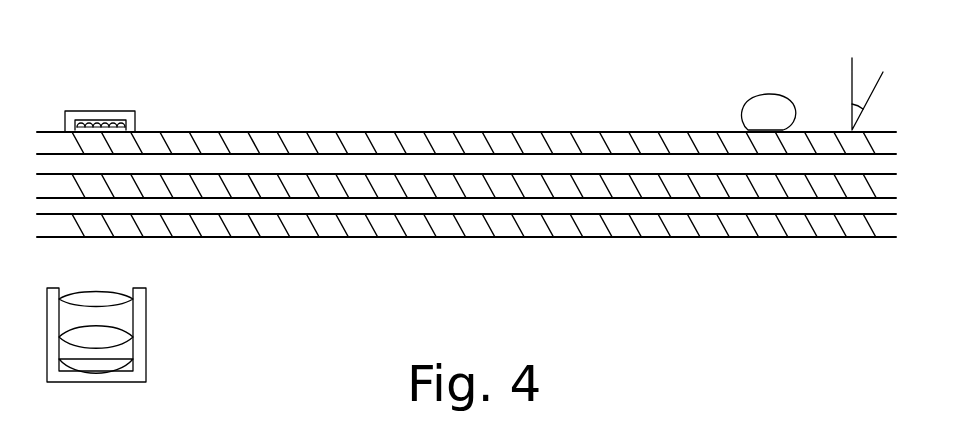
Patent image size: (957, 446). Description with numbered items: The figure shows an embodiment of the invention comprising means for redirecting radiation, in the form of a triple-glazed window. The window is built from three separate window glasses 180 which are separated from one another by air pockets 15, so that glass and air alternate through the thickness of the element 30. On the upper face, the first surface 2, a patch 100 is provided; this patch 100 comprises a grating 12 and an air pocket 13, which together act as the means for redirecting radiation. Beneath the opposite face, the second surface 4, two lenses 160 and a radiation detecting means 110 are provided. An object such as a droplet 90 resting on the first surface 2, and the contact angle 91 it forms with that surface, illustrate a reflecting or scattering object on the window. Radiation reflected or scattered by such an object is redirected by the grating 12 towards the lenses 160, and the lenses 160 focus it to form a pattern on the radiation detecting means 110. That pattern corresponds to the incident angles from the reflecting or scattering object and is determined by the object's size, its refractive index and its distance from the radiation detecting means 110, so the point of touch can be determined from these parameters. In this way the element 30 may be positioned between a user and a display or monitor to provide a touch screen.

The first surface 2 is at (233, 131).
The second surface 4 is at (655, 239).
The grating 12 is at (95, 127).
The air pocket 13 is at (117, 120).
The air pockets 15 is at (445, 206).
The element 30 is at (382, 140).
The window glasses 180 is at (507, 227).
The droplet 90 is at (766, 93).
The contact angle 91 is at (856, 130).
The patch 100 is at (99, 79).
The radiation detecting means 110 is at (97, 364).
The lenses 160 is at (108, 294).